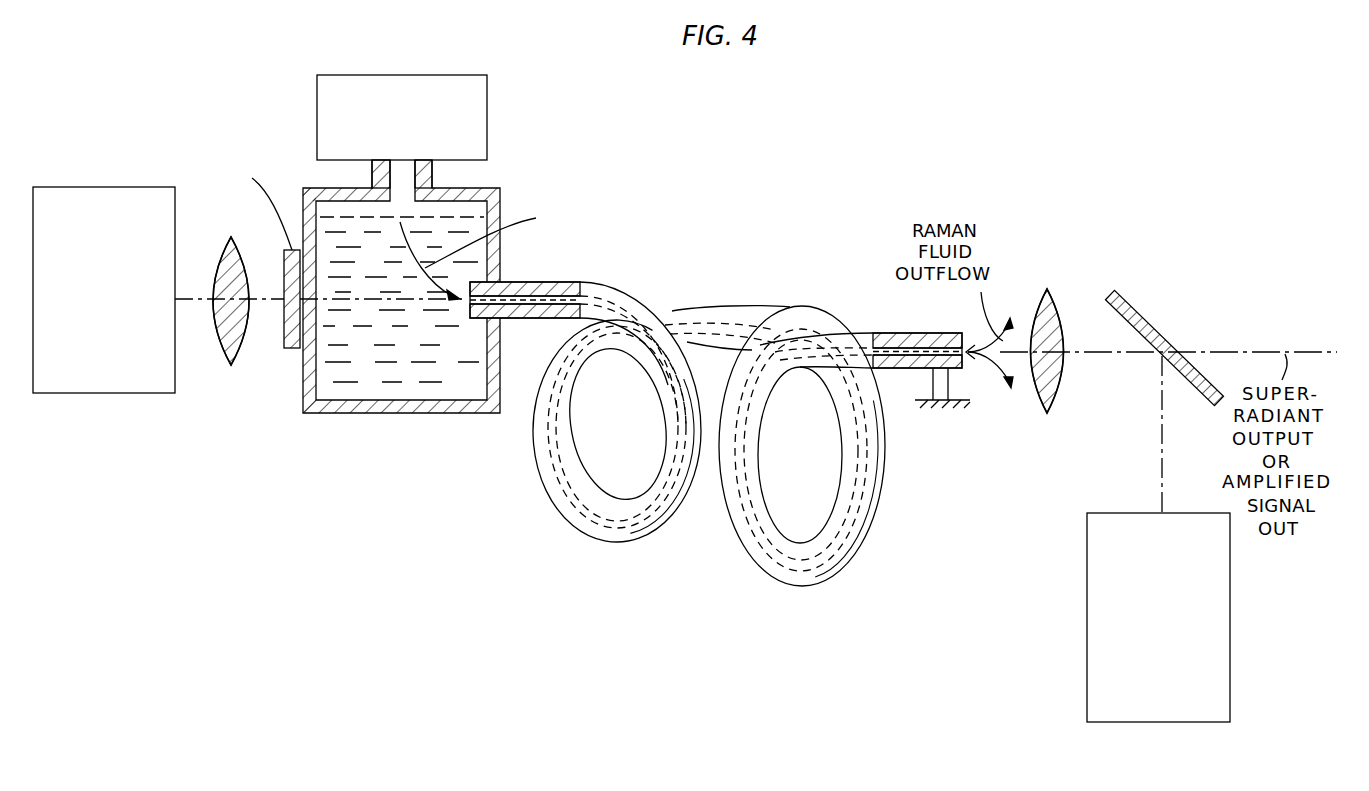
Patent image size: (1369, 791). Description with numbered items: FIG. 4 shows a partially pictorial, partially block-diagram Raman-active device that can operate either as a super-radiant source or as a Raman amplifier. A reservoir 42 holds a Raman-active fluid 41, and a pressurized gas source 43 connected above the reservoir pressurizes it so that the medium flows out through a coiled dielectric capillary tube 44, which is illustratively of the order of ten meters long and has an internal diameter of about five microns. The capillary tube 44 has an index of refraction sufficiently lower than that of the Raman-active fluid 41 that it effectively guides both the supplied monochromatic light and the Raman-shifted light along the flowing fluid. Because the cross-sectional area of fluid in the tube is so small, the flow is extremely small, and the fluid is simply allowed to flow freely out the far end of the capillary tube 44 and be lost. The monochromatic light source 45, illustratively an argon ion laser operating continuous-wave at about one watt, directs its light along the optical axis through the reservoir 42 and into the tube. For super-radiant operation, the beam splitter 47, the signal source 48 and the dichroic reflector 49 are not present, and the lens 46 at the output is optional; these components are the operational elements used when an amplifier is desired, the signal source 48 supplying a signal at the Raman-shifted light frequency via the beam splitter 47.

The Raman-active fluid 41 is at (455, 218).
The reservoir 42 is at (393, 372).
The pressurized gas source 43 is at (482, 96).
The coiled dielectric capillary tube 44 is at (567, 512).
The monochromatic light source 45 is at (95, 394).
The lens 46 is at (1040, 409).
The beam splitter 47 is at (1143, 323).
The signal source 48 is at (1088, 702).
The dichroic reflector 49 is at (291, 349).